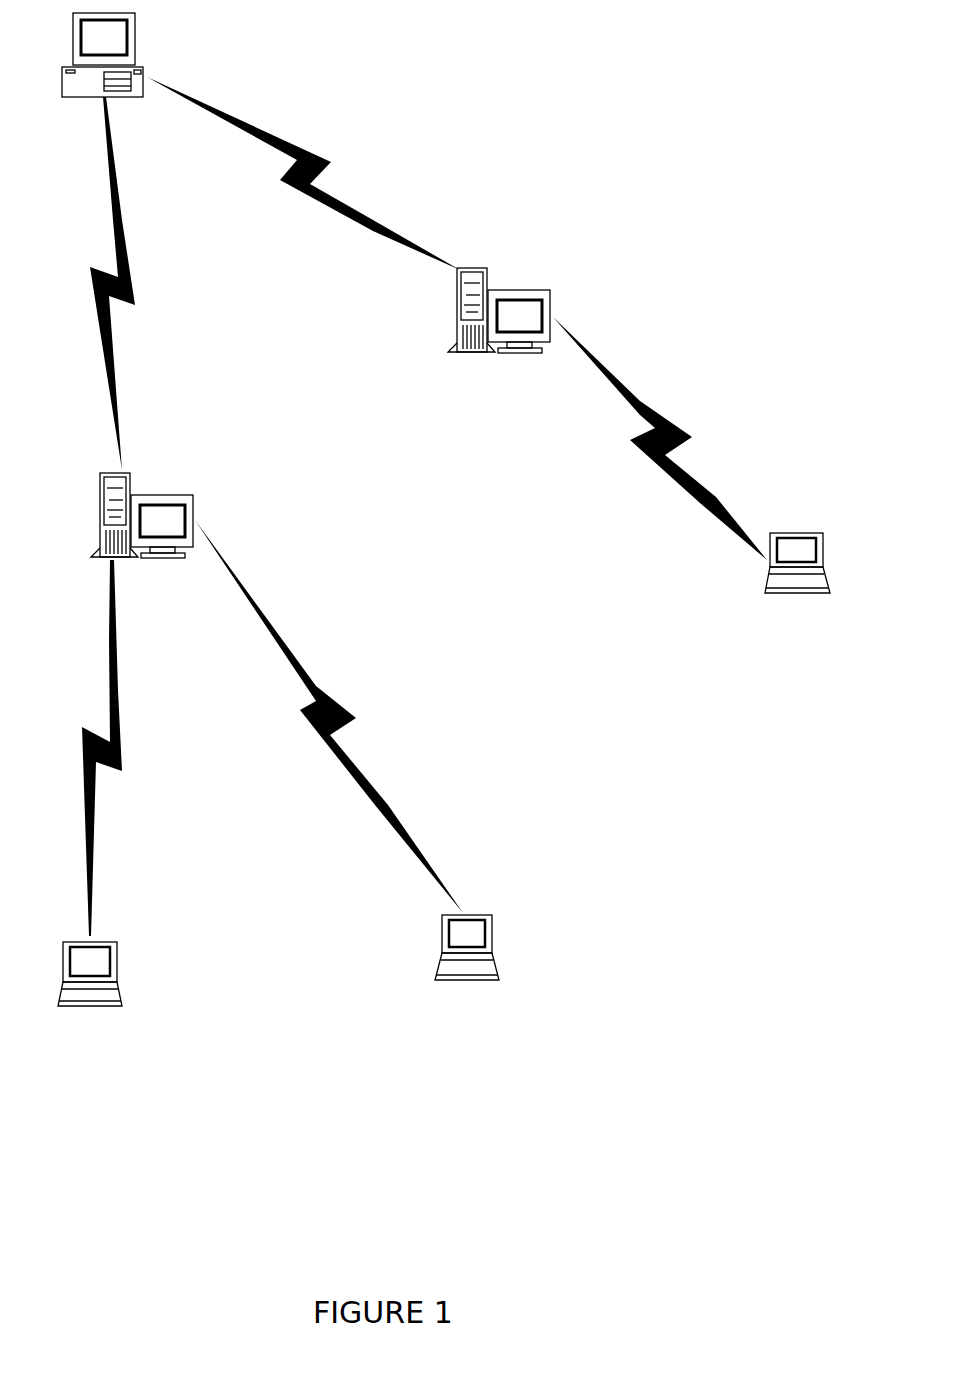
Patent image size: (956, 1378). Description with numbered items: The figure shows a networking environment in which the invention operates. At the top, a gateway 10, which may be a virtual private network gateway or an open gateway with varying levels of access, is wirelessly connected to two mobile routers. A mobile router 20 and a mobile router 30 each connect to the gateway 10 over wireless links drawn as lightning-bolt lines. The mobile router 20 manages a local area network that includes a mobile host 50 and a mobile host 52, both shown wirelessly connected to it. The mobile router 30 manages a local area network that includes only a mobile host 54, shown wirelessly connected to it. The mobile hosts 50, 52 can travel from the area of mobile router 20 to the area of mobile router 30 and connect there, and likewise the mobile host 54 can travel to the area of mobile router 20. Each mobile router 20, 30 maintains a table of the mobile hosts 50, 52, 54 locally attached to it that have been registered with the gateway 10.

The gateway 10 is at (101, 78).
The mobile router 20 is at (141, 539).
The mobile router 30 is at (497, 333).
The mobile host 50 is at (89, 997).
The mobile host 52 is at (465, 971).
The mobile host 54 is at (794, 588).